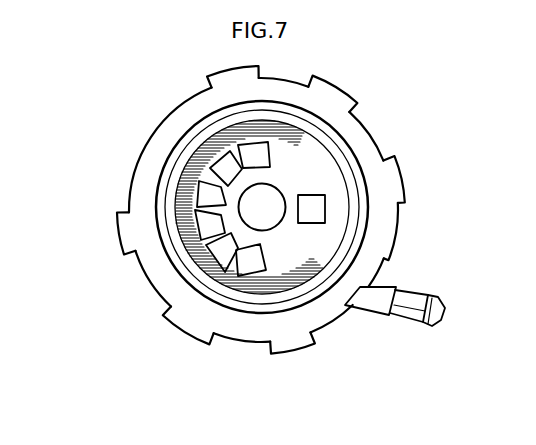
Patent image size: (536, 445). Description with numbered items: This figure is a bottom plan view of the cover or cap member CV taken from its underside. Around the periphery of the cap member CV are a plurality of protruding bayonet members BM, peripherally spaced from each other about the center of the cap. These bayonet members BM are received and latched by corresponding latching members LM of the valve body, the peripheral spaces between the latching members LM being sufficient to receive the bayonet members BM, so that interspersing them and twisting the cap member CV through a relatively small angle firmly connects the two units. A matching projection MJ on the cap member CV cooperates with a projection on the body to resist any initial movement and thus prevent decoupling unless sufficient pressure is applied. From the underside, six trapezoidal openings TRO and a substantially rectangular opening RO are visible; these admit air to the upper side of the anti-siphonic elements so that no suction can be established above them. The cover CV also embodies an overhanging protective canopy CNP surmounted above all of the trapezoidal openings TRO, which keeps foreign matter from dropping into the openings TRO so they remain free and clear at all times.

The bayonet member BM is at (222, 67).
The matching projection MJ is at (120, 213).
The latching member LM is at (137, 235).
The cap member CV is at (307, 142).
The protective canopy CNP is at (259, 133).
The trapezoidal opening TRO is at (237, 163).
The rectangular opening RO is at (315, 212).